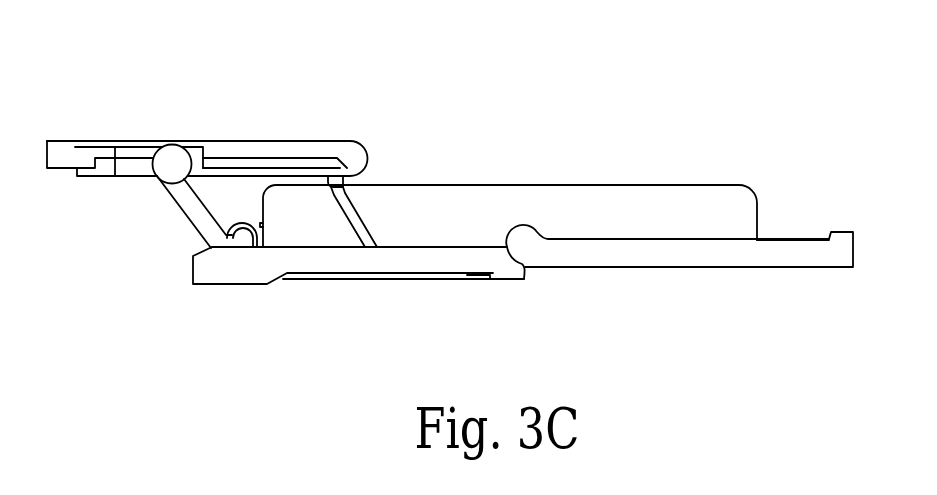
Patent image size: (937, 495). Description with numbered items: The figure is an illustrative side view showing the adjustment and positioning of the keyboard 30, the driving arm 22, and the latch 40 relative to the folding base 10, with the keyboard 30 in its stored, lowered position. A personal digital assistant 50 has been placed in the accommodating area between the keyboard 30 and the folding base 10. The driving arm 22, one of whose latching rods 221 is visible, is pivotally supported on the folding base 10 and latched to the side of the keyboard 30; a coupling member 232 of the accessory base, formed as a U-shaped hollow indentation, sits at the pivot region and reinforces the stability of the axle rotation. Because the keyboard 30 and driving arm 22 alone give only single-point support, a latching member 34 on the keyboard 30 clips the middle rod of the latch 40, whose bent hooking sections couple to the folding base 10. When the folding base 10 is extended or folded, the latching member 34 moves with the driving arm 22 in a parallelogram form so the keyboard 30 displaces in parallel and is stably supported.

The folding base 10 is at (500, 265).
The driving arm 22 is at (167, 202).
The keyboard 30 is at (255, 148).
The latching member 34 is at (343, 180).
The latch 40 is at (350, 217).
The personal digital assistant 50 is at (680, 212).
The latching rod 221 is at (193, 213).
The coupling member 232 is at (247, 247).